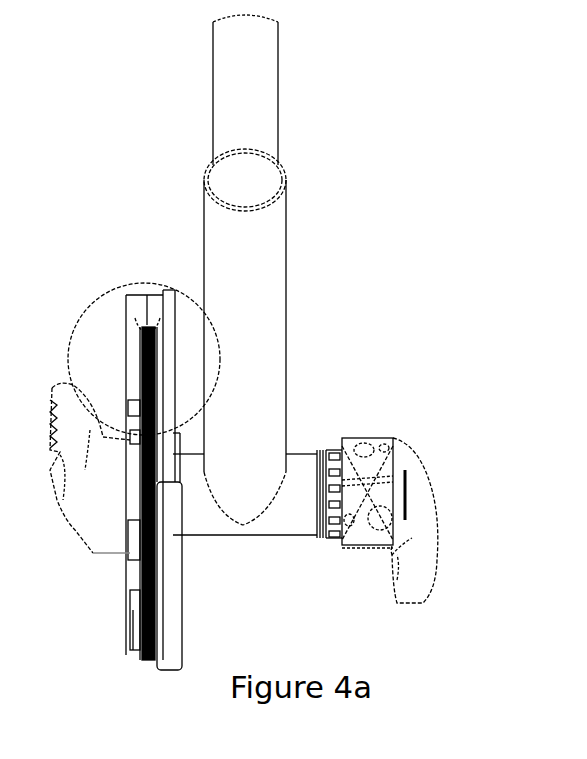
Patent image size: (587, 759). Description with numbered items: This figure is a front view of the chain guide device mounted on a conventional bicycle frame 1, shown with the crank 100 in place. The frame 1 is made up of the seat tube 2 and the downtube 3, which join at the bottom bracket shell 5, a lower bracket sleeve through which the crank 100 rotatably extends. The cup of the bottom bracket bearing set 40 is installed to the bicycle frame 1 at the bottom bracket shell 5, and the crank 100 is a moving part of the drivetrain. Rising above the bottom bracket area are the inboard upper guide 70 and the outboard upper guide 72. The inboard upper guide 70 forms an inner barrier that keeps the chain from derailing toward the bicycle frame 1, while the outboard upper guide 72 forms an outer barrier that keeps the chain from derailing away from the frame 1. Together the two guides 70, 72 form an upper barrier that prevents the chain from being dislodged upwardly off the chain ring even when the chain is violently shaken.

The bicycle frame 1 is at (310, 315).
The seat tube 2 is at (250, 108).
The downtube 3 is at (255, 266).
The bottom bracket shell 5 is at (289, 520).
The bottom bracket bearing set 40 is at (337, 452).
The inboard upper guide 70 is at (157, 303).
The outboard upper guide 72 is at (133, 303).
The crank 100 is at (420, 583).